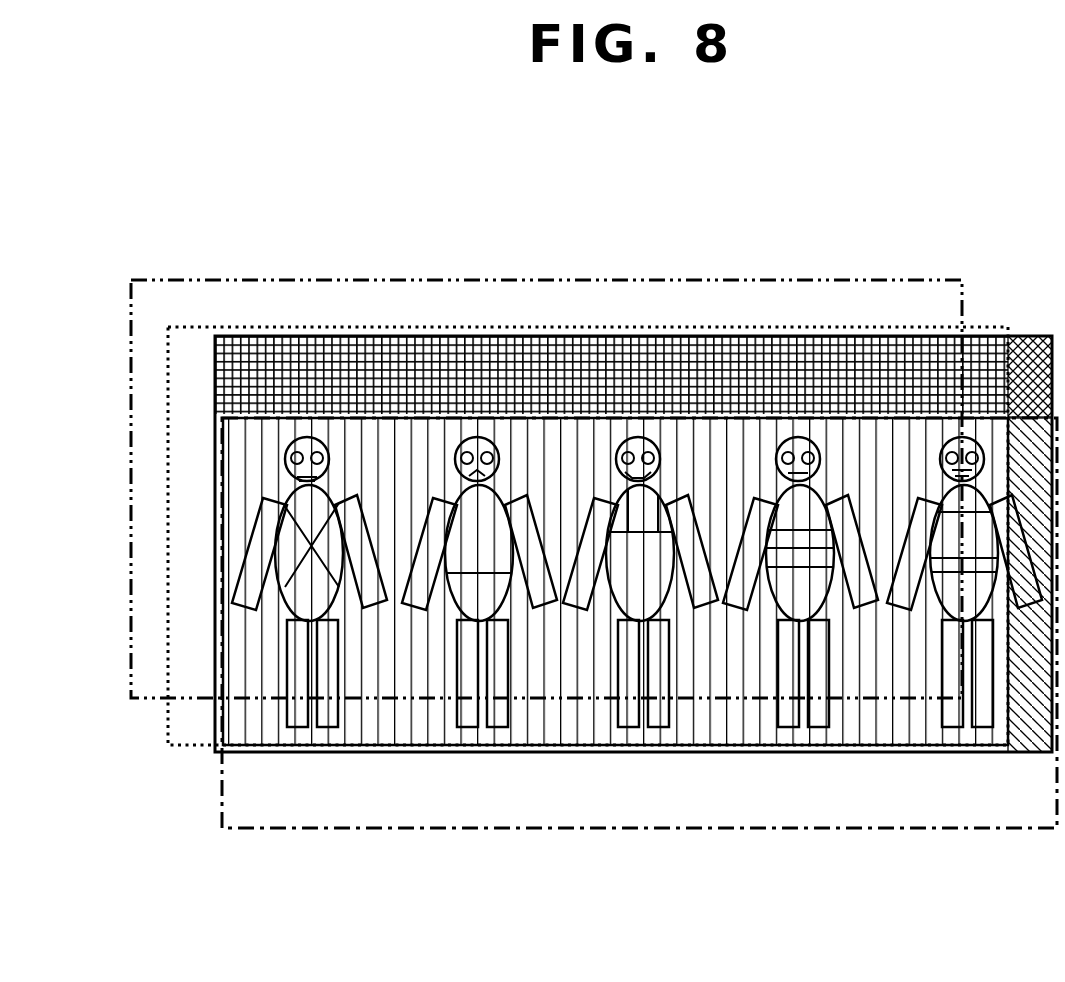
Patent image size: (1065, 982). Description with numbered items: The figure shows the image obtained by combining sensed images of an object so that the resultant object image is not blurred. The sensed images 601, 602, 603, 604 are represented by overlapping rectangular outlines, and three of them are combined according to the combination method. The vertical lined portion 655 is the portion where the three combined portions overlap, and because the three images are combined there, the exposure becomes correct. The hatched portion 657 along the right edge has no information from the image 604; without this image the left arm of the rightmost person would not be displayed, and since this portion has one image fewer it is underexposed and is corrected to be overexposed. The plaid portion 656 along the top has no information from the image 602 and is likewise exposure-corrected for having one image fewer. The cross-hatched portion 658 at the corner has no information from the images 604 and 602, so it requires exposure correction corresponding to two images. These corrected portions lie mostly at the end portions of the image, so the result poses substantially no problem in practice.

The sensed image 601 is at (443, 753).
The sensed image 602 is at (292, 828).
The sensed image 603 is at (150, 278).
The sensed image 604 is at (198, 326).
The vertical lined portion 655 is at (250, 673).
The plaid portion 656 is at (433, 350).
The hatched portion 657 is at (1028, 710).
The cross-hatched portion 658 is at (1033, 367).